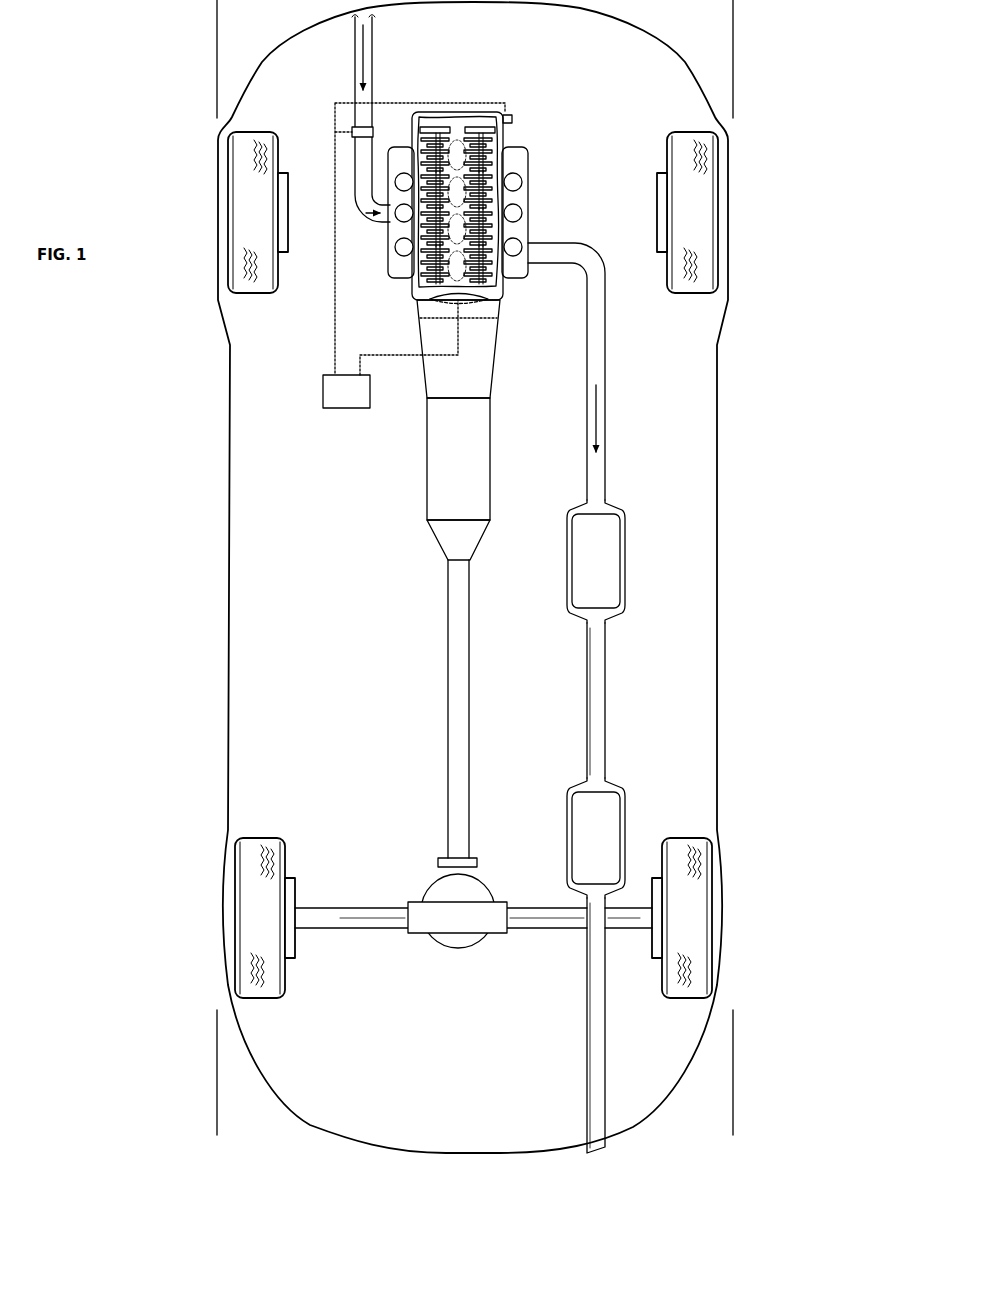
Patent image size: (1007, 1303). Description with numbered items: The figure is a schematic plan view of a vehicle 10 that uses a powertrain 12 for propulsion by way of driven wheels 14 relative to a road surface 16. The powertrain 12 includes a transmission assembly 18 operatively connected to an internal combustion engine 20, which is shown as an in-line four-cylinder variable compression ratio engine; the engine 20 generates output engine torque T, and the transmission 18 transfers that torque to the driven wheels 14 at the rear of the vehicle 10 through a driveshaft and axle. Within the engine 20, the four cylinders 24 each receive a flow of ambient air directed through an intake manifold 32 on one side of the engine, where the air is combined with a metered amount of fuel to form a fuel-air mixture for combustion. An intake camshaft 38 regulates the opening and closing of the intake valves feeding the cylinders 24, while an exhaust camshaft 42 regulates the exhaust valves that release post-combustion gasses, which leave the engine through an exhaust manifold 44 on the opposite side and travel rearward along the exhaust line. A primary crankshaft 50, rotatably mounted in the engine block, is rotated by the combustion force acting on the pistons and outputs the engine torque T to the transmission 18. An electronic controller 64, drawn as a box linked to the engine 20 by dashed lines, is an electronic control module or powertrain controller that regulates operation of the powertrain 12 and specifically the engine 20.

The vehicle 10 is at (222, 480).
The powertrain 12 is at (473, 584).
The driven wheels 14 is at (272, 914).
The road surface 16 is at (709, 17).
The transmission assembly 18 is at (470, 489).
The internal combustion engine 20 is at (427, 230).
The cylinder 24 is at (456, 208).
The intake manifold 32 is at (397, 267).
The intake camshaft 38 is at (428, 125).
The exhaust camshaft 42 is at (486, 125).
The exhaust manifold 44 is at (523, 268).
The primary crankshaft 50 is at (447, 305).
The electronic controller 64 is at (356, 400).
The engine torque T is at (474, 307).